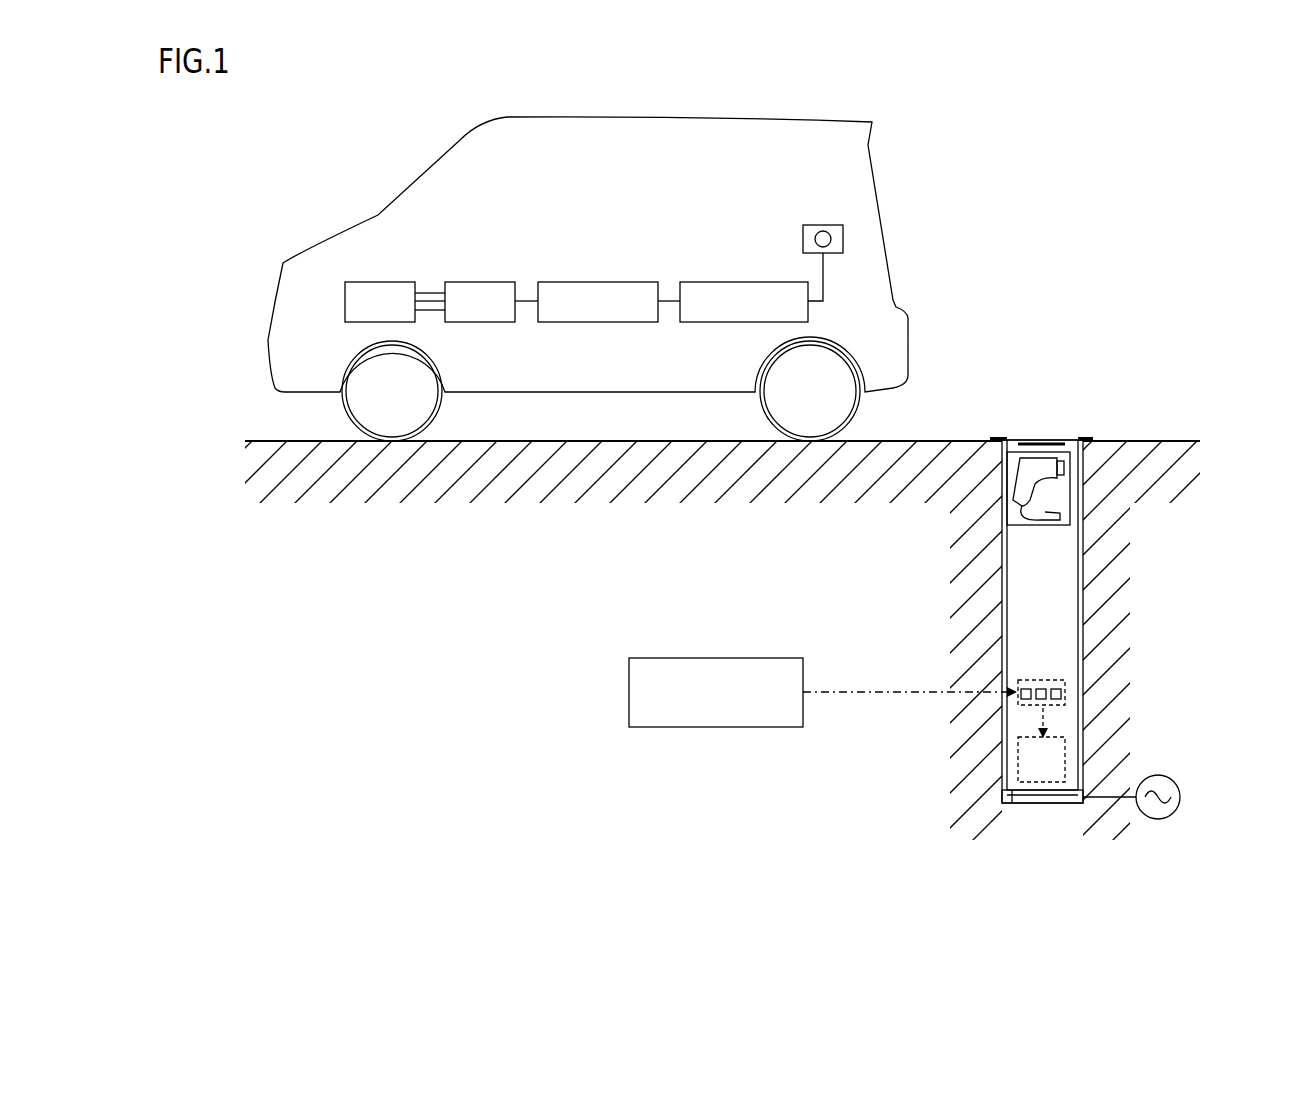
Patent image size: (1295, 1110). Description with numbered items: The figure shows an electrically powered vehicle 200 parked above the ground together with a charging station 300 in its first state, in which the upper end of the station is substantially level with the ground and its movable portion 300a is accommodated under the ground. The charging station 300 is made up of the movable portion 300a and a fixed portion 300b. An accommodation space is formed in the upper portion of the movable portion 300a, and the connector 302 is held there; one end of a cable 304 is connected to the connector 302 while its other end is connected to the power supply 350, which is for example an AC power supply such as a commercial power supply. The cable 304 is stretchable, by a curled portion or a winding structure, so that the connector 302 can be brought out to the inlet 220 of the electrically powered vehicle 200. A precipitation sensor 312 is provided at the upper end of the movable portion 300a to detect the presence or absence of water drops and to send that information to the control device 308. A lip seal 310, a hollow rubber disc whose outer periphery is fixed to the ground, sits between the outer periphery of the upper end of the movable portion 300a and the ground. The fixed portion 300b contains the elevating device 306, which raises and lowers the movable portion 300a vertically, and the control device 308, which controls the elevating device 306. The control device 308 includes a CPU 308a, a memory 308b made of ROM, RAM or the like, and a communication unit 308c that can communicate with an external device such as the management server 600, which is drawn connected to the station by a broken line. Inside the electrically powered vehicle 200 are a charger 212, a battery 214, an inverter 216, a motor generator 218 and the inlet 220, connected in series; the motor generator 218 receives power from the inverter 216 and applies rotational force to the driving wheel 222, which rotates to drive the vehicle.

The electrically powered vehicle 200 is at (737, 122).
The charger 212 is at (745, 278).
The battery 214 is at (596, 278).
The inverter 216 is at (482, 278).
The motor generator 218 is at (380, 278).
The inlet 220 is at (823, 223).
The driving wheel 222 is at (437, 378).
The charging station 300 is at (1044, 621).
The movable portion 300a is at (1067, 440).
The fixed portion 300b is at (1033, 805).
The connector 302 is at (1047, 478).
The cable 304 is at (1048, 522).
The elevating device 306 is at (1065, 757).
The control device 308 is at (1044, 694).
The CPU 308a is at (1058, 682).
The memory 308b is at (1042, 681).
The communication unit 308c is at (1027, 703).
The lip seal 310 is at (1002, 440).
The precipitation sensor 312 is at (1035, 440).
The power supply 350 is at (1182, 797).
The management server 600 is at (748, 657).